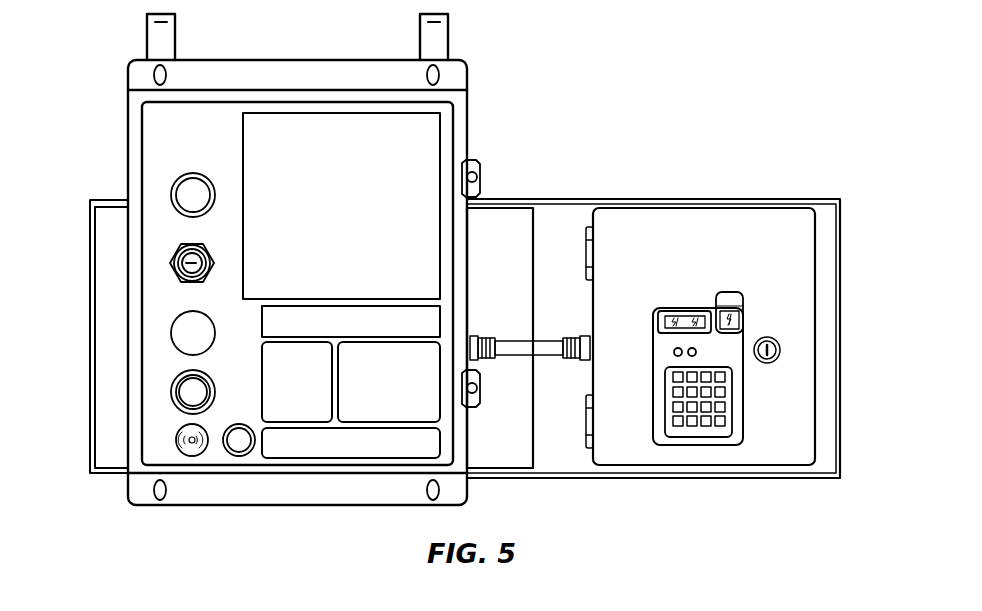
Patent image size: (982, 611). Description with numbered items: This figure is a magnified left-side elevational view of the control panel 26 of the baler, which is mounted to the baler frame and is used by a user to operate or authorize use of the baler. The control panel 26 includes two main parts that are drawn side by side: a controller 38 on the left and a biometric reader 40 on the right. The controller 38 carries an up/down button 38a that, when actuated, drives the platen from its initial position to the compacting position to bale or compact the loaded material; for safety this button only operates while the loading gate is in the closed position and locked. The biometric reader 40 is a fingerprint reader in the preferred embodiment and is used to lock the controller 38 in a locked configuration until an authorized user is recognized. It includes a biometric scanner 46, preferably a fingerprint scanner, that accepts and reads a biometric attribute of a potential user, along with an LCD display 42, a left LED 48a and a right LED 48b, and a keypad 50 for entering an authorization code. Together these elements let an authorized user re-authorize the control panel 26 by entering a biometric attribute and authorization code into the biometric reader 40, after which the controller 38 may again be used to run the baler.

The control panel 26 is at (623, 111).
The controller 38 is at (153, 134).
The up/down button 38a is at (186, 263).
The biometric reader 40 is at (740, 385).
The LCD display 42 is at (686, 320).
The biometric scanner 46 is at (740, 320).
The left LED 48a is at (675, 350).
The right LED 48b is at (690, 356).
The keypad 50 is at (722, 408).